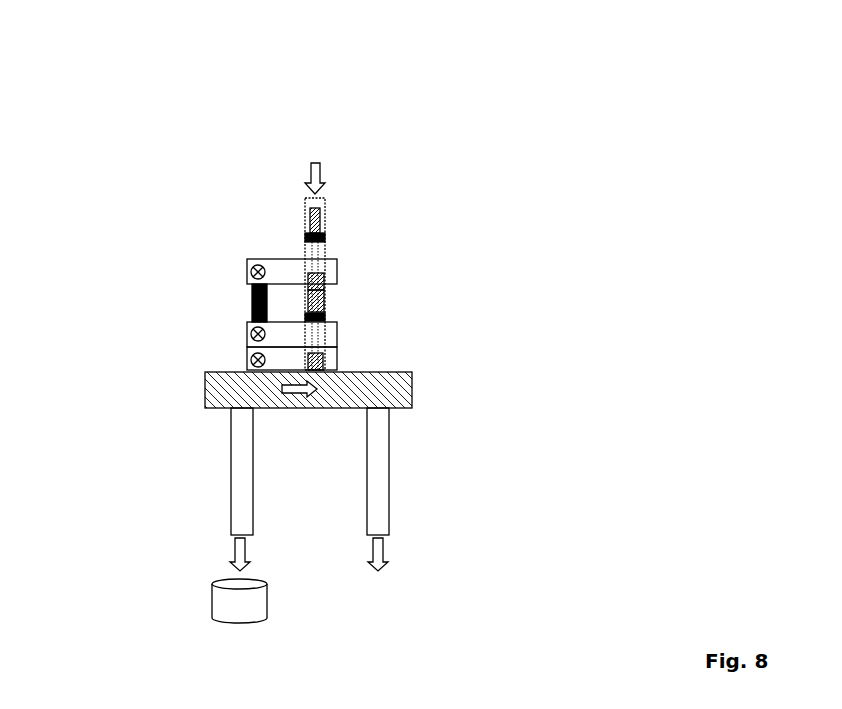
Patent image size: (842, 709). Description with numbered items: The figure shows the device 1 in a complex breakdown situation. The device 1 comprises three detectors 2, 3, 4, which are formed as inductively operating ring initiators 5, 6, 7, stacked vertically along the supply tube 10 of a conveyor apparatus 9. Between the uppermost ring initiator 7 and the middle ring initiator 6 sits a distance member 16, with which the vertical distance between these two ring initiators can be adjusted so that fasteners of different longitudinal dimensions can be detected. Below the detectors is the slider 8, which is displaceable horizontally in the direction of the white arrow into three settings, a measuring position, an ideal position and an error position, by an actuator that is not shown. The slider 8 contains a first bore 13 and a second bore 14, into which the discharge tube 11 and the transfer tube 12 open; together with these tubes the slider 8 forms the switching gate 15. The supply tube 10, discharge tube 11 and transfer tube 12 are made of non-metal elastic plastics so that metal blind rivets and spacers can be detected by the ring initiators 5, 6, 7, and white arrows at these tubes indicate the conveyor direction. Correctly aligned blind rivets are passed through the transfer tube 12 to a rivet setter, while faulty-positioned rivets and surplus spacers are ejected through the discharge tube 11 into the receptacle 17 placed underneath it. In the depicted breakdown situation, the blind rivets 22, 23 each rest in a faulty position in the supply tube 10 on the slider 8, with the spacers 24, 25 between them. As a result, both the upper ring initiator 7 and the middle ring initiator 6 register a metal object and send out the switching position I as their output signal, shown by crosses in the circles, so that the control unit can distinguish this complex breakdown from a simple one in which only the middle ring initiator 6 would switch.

The device 1 is at (340, 117).
The conveyor apparatus 9 is at (172, 161).
The supply tube 10 is at (327, 198).
The blind rivet 22 is at (328, 230).
The ring initiator 7 is at (325, 273).
The detector 4 is at (232, 270).
The spacer 24 is at (333, 290).
The distance member 16 is at (252, 298).
The blind rivet 23 is at (330, 313).
The ring initiator 6 is at (337, 325).
The detector 3 is at (227, 331).
The spacer 25 is at (337, 358).
The detector 2 is at (224, 353).
The ring initiator 5 is at (337, 366).
The switching gate 15 is at (191, 388).
The slider 8 is at (413, 395).
The first bore 13 is at (243, 389).
The second bore 14 is at (382, 389).
The discharge tube 11 is at (242, 443).
The transfer tube 12 is at (382, 455).
The receptacle 17 is at (239, 601).